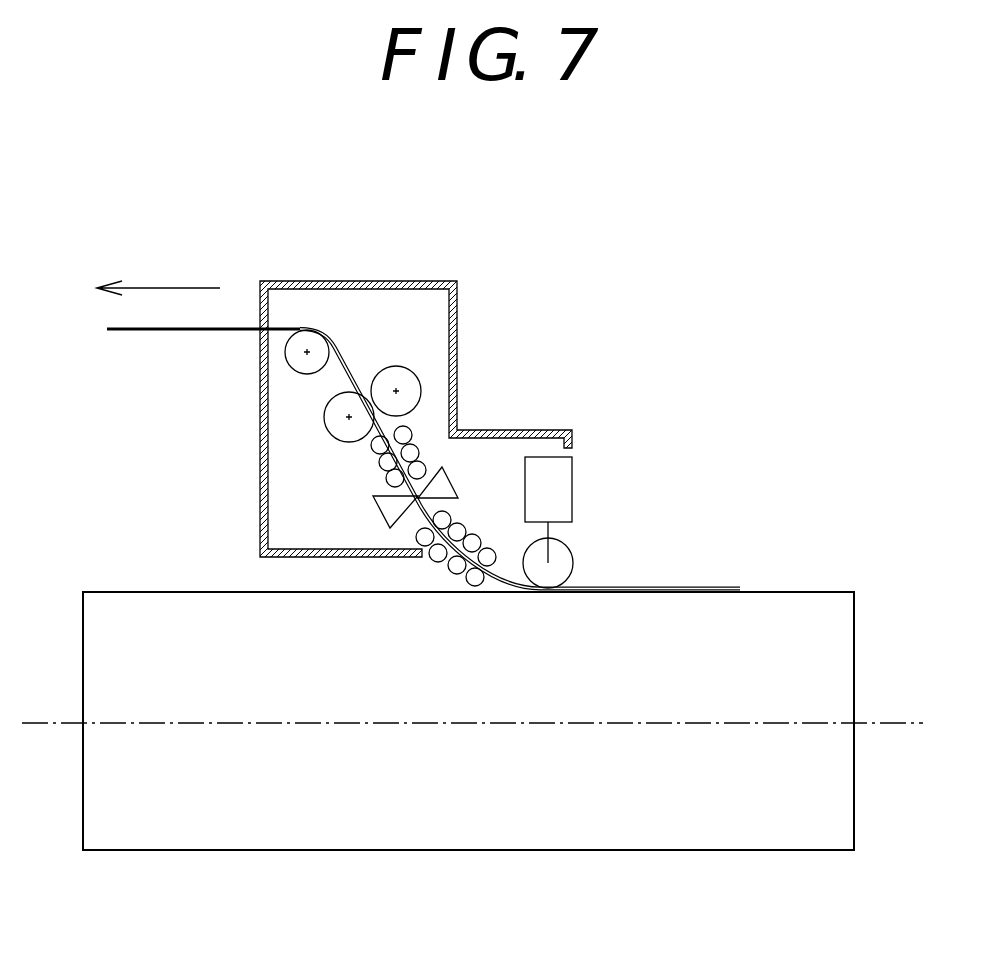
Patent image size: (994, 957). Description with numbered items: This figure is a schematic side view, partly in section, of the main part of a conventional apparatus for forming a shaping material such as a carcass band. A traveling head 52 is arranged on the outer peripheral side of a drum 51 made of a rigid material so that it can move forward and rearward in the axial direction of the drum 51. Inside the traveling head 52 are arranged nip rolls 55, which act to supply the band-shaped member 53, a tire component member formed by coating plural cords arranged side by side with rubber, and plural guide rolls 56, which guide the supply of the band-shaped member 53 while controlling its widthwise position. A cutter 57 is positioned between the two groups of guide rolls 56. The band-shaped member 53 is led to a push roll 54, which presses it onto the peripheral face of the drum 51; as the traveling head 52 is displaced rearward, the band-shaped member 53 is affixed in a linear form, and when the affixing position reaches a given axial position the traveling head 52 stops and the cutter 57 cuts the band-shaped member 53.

The drum 51 is at (435, 800).
The traveling head 52 is at (470, 327).
The band-shaped member 53 is at (685, 586).
The push roll 54 is at (560, 560).
The nip rolls 55 is at (340, 412).
The guide rolls 56 is at (388, 462).
The cutter 57 is at (383, 503).